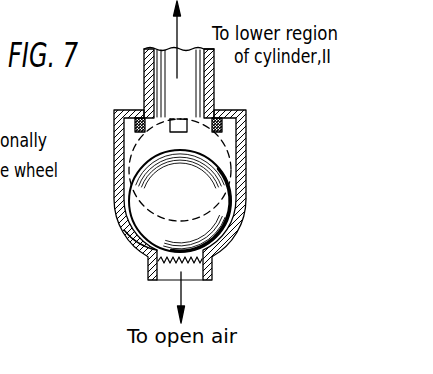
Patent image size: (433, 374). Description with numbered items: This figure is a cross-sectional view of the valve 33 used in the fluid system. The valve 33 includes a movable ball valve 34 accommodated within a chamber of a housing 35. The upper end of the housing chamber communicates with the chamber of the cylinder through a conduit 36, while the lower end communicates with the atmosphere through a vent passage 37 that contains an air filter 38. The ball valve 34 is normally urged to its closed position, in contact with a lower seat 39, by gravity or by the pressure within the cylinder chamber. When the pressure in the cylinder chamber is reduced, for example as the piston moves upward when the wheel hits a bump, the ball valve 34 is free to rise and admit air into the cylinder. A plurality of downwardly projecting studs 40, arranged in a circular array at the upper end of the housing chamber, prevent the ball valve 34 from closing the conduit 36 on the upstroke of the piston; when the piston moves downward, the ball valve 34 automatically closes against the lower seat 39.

The valve 33 is at (192, 180).
The ball valve 34 is at (140, 216).
The housing 35 is at (118, 178).
The conduit 36 is at (196, 85).
The vent passage 37 is at (163, 278).
The air filter 38 is at (213, 264).
The lower seat 39 is at (137, 247).
The studs 40 is at (115, 124).